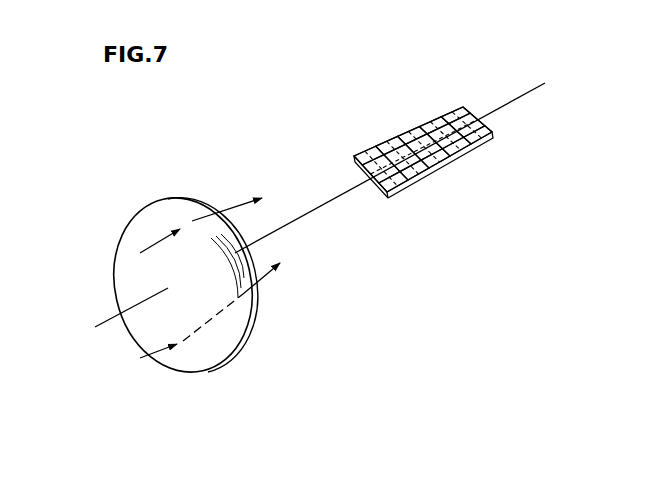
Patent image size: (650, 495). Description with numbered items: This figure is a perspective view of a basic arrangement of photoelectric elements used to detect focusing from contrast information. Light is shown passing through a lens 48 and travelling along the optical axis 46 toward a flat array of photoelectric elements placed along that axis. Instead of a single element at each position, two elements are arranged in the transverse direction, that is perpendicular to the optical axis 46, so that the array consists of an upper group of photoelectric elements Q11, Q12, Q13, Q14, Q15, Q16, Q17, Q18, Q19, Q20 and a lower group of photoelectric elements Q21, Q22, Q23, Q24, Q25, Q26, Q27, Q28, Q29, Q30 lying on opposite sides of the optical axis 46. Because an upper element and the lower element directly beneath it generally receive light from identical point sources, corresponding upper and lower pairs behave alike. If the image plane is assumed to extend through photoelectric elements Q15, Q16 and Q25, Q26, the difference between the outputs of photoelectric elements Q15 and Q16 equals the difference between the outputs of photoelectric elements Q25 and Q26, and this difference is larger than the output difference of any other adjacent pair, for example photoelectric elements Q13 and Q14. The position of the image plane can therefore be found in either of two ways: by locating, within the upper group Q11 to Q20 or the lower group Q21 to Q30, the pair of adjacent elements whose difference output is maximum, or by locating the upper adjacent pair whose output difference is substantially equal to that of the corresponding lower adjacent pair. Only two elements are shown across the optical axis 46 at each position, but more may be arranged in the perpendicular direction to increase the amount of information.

The photoelectric element Q11 is at (356, 157).
The photoelectric element Q12 is at (393, 197).
The photoelectric element Q13 is at (382, 147).
The photoelectric element Q14 is at (412, 180).
The photoelectric element Q15 is at (405, 137).
The photoelectric element Q16 is at (440, 163).
The photoelectric element Q17 is at (437, 128).
The photoelectric element Q18 is at (461, 159).
The photoelectric element Q19 is at (462, 117).
The photoelectric element Q20 is at (494, 136).
The photoelectric element Q21 is at (360, 167).
The photoelectric element Q22 is at (386, 197).
The photoelectric element Q23 is at (382, 147).
The photoelectric element Q24 is at (423, 178).
The photoelectric element Q25 is at (396, 146).
The photoelectric element Q26 is at (437, 165).
The photoelectric element Q27 is at (427, 130).
The photoelectric element Q28 is at (463, 162).
The photoelectric element Q29 is at (455, 126).
The photoelectric element Q30 is at (494, 141).
The optical axis 46 is at (313, 210).
The lens 48 is at (200, 372).